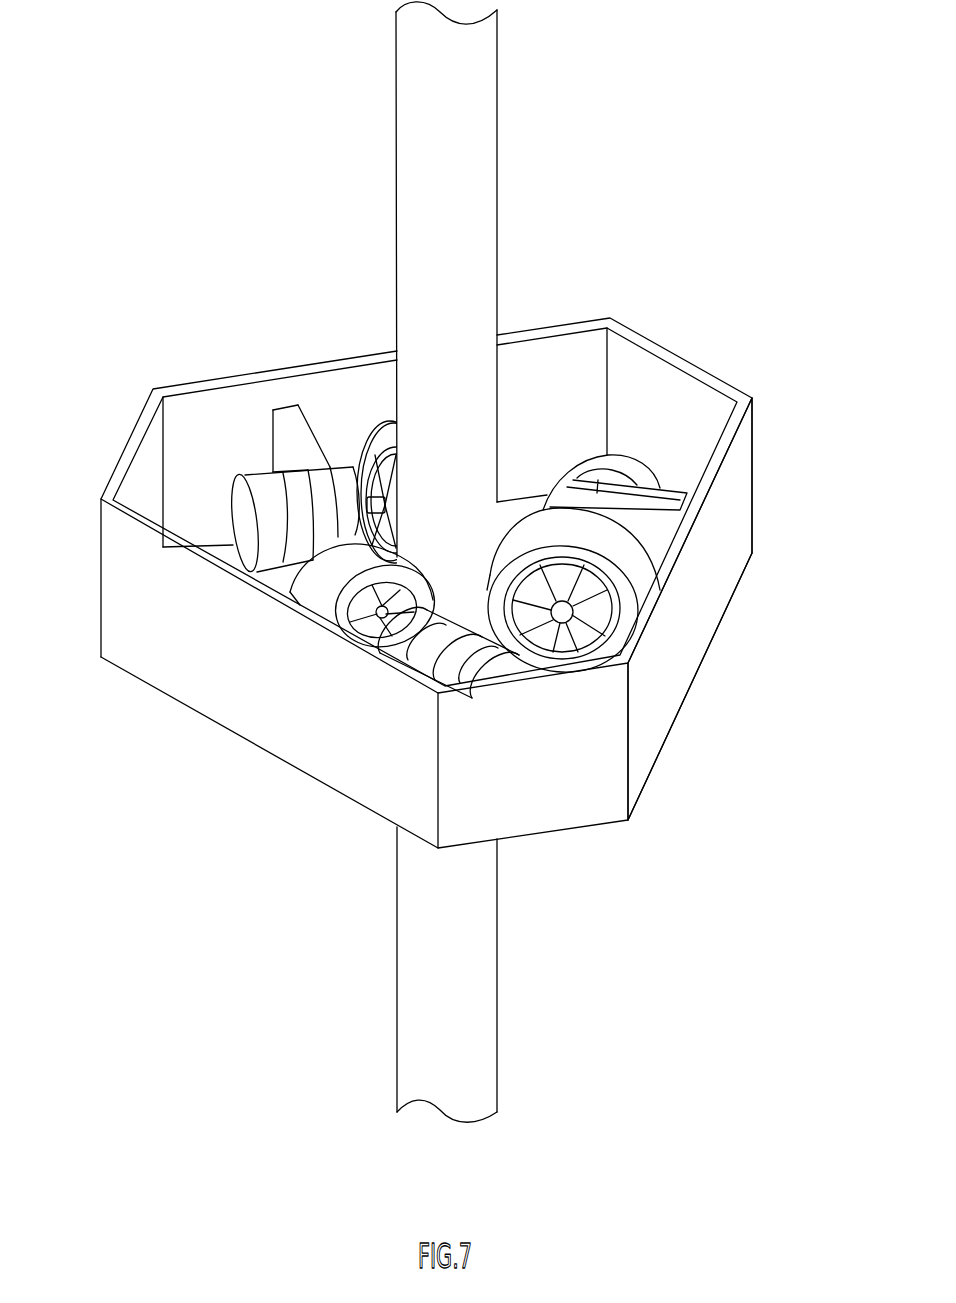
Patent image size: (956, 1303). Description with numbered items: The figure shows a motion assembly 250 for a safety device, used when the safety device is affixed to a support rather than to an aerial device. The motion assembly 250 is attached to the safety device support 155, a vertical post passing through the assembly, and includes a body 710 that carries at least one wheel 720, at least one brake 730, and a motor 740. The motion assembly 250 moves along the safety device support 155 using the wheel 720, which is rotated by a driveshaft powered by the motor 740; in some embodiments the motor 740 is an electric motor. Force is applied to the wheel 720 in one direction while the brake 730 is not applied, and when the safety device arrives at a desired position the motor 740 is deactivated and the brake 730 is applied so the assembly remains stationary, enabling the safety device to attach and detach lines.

The safety device support 155 is at (403, 167).
The motion assembly 250 is at (698, 150).
The body 710 is at (118, 596).
The wheel 720 is at (593, 620).
The brake 730 is at (657, 592).
The motor 740 is at (635, 472).